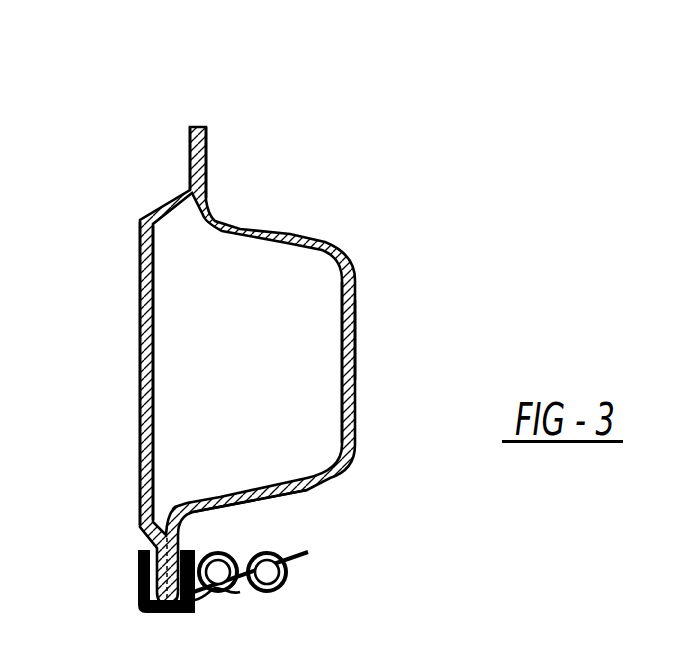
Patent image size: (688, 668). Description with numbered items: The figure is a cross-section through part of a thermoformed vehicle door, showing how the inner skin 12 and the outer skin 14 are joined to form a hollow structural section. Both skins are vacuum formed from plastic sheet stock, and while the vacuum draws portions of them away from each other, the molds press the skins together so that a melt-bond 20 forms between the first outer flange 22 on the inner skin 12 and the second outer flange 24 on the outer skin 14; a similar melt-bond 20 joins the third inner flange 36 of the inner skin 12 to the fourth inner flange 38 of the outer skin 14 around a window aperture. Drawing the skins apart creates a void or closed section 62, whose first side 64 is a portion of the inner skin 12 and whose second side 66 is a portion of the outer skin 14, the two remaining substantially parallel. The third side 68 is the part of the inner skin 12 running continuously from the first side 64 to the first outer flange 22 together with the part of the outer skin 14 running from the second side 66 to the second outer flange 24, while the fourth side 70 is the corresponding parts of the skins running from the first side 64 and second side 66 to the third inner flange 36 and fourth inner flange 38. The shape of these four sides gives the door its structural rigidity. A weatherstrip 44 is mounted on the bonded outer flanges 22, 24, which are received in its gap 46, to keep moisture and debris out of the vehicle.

The inner skin 12 is at (355, 282).
The outer skin 14 is at (143, 440).
The melt-bond 20 is at (197, 113).
The first outer flange 22 is at (175, 532).
The second outer flange 24 is at (158, 548).
The third inner flange 36 is at (206, 167).
The fourth inner flange 38 is at (190, 165).
The weatherstrip 44 is at (262, 590).
The gap 46 is at (145, 605).
The closed section 62 is at (238, 368).
The first side 64 is at (343, 315).
The second side 66 is at (153, 387).
The third side 68 is at (195, 477).
The fourth side 70 is at (198, 240).